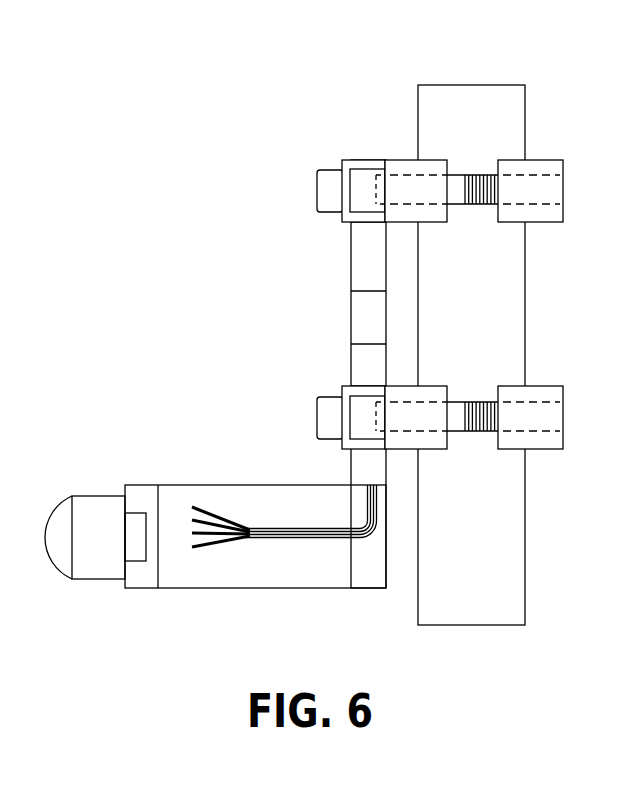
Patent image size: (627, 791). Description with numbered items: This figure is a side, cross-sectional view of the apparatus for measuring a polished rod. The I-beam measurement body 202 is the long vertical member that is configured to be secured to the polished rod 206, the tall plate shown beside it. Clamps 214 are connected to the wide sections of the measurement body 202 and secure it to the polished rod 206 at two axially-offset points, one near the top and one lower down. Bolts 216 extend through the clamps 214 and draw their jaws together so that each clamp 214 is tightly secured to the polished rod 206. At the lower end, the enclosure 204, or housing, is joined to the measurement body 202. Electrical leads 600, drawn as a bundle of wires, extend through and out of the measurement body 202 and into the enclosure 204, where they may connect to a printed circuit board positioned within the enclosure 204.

The I-beam measurement body 202 is at (350, 253).
The enclosure 204 is at (257, 590).
The polished rod 206 is at (472, 85).
The clamp 214 is at (541, 166).
The bolt 216 is at (458, 433).
The electrical leads 600 is at (233, 527).